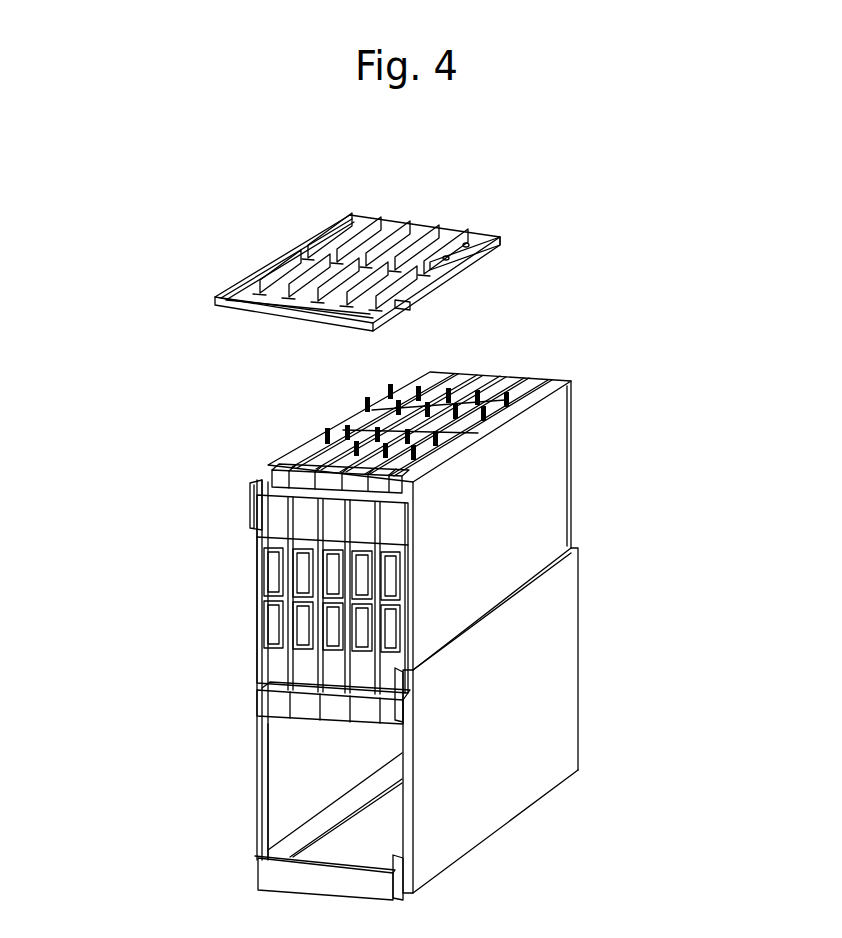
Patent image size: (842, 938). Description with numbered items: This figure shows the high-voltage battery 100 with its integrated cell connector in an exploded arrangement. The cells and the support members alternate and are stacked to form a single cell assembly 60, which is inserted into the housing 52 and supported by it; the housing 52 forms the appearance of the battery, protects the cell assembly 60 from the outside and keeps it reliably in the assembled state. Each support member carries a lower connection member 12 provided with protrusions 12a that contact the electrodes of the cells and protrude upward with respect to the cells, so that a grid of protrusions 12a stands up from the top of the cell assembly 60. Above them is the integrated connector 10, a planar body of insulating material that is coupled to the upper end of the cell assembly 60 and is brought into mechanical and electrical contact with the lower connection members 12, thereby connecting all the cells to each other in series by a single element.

The integrated connector 10 is at (435, 236).
The lower connection member 12 is at (440, 372).
The protrusion 12a is at (343, 441).
The housing 52 is at (552, 650).
The cell assembly 60 is at (572, 435).
The high-voltage battery 100 is at (200, 483).